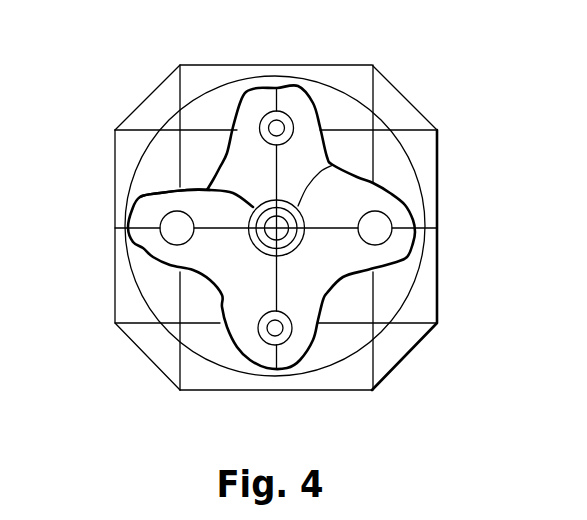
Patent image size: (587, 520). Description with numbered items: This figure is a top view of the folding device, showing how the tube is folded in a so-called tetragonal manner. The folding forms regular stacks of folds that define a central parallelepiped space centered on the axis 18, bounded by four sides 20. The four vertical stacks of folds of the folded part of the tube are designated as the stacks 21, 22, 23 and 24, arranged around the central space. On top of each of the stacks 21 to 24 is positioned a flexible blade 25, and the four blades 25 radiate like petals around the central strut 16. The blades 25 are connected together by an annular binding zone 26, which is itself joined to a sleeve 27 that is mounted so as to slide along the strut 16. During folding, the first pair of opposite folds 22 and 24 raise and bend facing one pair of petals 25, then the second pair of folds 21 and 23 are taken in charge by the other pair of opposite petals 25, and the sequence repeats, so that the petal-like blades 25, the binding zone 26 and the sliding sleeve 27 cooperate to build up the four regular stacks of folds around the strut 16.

The strut 16 is at (252, 249).
The axis 18 is at (300, 247).
The sides 20 is at (290, 220).
The vertical stack of folds 21 is at (388, 148).
The vertical stack of folds 22 is at (330, 388).
The vertical stack of folds 23 is at (122, 303).
The vertical stack of folds 24 is at (223, 102).
The flexible blade 25 is at (300, 107).
The annular binding zone 26 is at (340, 163).
The sleeve 27 is at (150, 196).